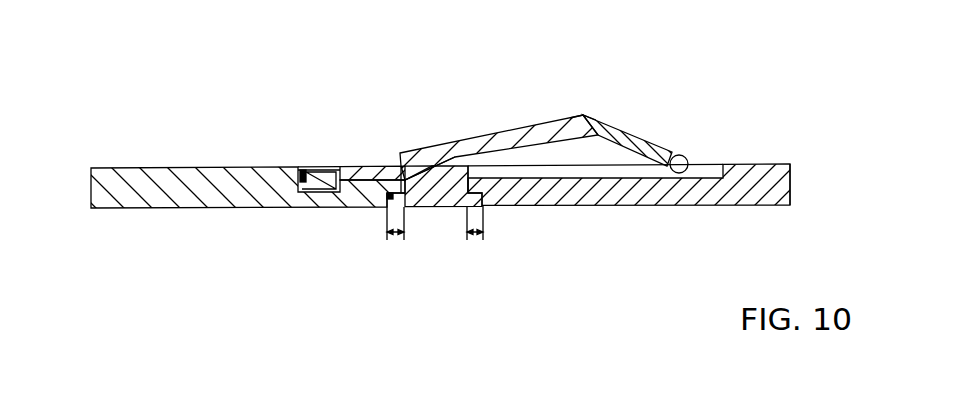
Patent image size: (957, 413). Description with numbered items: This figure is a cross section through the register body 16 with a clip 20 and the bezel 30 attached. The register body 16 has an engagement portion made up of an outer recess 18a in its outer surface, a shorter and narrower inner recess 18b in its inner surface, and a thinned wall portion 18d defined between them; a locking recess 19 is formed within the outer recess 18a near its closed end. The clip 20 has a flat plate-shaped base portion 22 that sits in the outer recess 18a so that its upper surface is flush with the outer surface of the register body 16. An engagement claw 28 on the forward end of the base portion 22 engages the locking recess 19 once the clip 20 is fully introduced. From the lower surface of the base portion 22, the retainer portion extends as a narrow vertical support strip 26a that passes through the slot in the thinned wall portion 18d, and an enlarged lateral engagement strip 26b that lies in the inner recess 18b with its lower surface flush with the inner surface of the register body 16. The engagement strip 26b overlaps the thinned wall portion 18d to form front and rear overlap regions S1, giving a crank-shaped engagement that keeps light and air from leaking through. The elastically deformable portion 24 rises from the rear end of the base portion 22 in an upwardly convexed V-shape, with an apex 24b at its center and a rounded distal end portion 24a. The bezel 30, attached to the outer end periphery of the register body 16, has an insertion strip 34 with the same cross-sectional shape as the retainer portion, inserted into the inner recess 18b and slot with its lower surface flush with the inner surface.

The register body 16 is at (214, 180).
The locking recess 19 is at (311, 172).
The engagement claw 28 is at (328, 194).
The base portion 22 is at (365, 176).
The thinned wall portion 18d is at (399, 166).
The inner recess 18b is at (388, 202).
The support strip 26a is at (437, 186).
The engagement strip 26b is at (428, 206).
The clip 20 is at (562, 115).
The elastically deformable portion 24 is at (630, 135).
The apex 24b is at (585, 109).
The distal end portion 24a is at (685, 157).
The insertion strip 34 is at (577, 197).
The outer recess 18a is at (523, 175).
The bezel 30 is at (790, 164).
The overlap region S1 is at (395, 236).